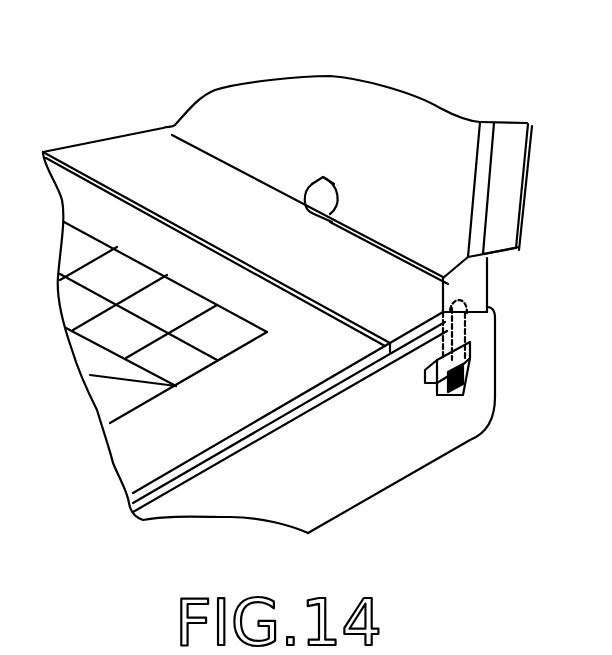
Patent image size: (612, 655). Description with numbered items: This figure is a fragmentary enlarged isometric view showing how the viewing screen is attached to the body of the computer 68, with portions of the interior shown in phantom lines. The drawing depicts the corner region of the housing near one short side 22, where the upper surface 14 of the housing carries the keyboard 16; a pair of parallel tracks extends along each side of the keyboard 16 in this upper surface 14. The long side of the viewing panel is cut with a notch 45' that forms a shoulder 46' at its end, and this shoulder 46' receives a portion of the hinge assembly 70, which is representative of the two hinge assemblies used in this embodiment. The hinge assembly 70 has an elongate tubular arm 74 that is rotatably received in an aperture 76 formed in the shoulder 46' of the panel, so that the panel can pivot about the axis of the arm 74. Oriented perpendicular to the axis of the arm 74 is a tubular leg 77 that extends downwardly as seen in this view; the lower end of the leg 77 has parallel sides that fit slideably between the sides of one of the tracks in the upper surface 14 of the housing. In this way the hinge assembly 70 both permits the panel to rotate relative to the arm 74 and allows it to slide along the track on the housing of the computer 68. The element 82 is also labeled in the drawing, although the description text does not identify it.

The upper surface 14 is at (233, 417).
The keyboard 16 is at (168, 365).
The short side 22 is at (508, 160).
The notch 45' is at (377, 115).
The shoulder 46' is at (260, 103).
The computer 68 is at (500, 80).
The hinge assembly 70 is at (497, 276).
The elongate tubular arm 74 is at (390, 218).
The aperture 76 is at (322, 185).
The tubular leg 77 is at (487, 297).
The retainer 82 is at (340, 388).